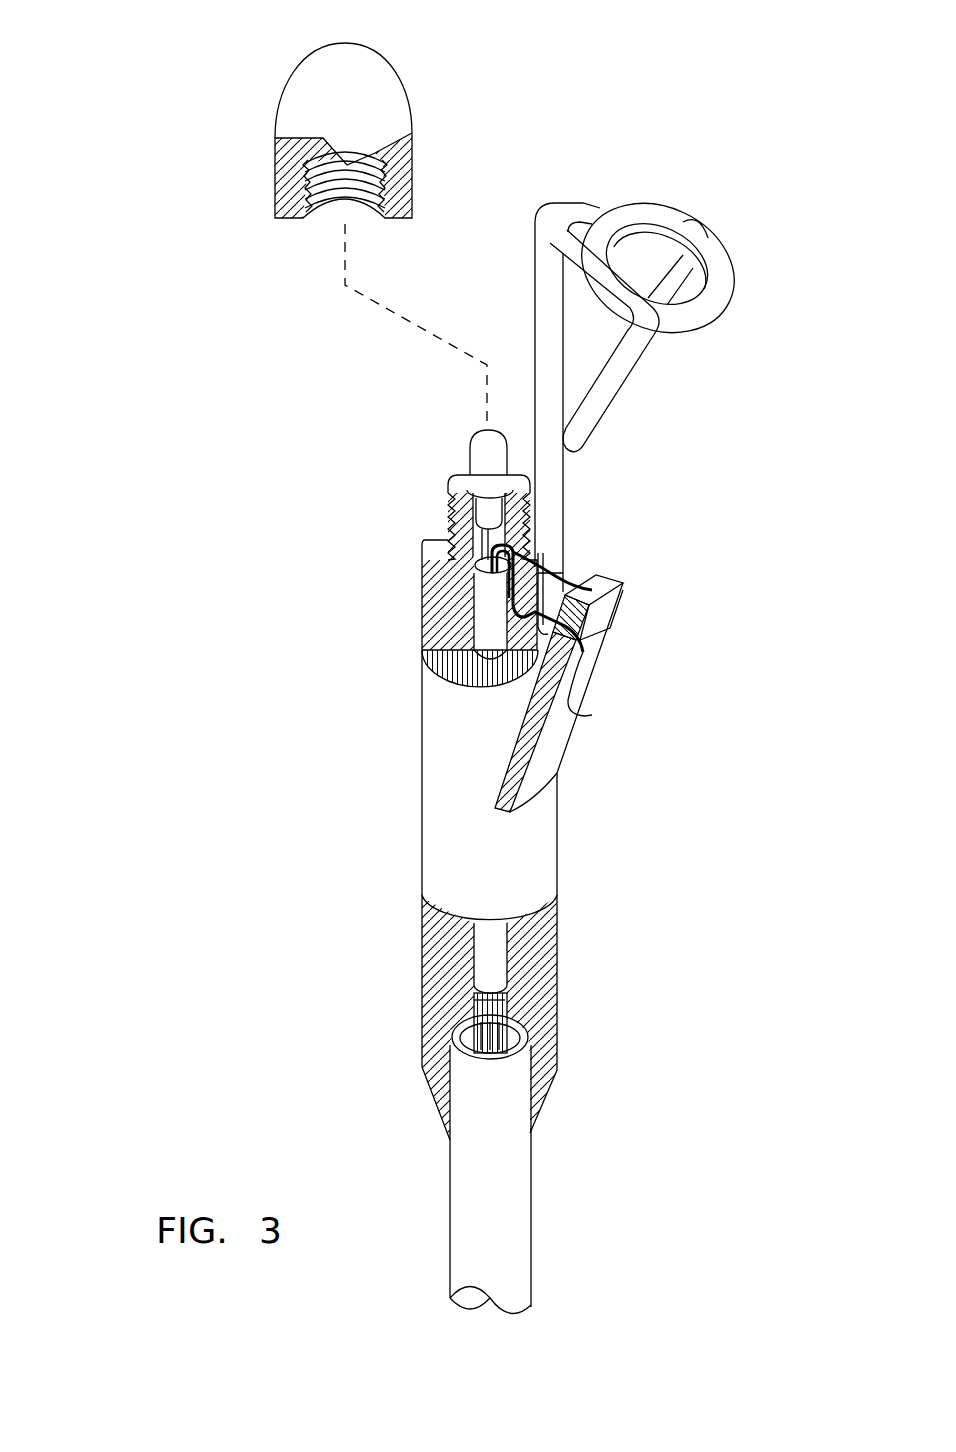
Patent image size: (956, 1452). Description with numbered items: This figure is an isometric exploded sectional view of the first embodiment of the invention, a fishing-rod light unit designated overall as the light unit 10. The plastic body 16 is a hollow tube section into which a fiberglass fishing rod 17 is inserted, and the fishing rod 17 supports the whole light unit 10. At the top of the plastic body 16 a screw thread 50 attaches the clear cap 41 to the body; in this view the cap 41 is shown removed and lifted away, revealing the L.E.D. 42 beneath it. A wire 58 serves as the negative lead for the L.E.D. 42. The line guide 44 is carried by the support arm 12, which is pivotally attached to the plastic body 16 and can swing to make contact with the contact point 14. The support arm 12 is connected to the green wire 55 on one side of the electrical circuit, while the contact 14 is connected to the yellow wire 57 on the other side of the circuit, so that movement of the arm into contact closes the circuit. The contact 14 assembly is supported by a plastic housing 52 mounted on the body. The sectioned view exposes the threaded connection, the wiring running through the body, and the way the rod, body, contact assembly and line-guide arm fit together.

The light unit 10 is at (320, 427).
The support arm 12 is at (553, 500).
The contact point 14 is at (592, 593).
The plastic body 16 is at (442, 778).
The fishing rod 17 is at (515, 1205).
The clear cap 41 is at (288, 92).
The L.E.D. 42 is at (480, 443).
The line guide 44 is at (620, 215).
The screw thread 50 is at (417, 542).
The plastic housing 52 is at (588, 680).
The green wire 55 is at (580, 713).
The yellow wire 57 is at (563, 583).
The wire 58 is at (475, 545).